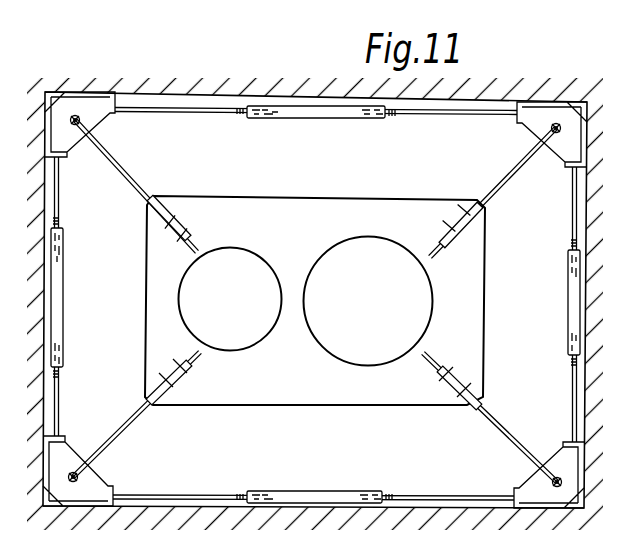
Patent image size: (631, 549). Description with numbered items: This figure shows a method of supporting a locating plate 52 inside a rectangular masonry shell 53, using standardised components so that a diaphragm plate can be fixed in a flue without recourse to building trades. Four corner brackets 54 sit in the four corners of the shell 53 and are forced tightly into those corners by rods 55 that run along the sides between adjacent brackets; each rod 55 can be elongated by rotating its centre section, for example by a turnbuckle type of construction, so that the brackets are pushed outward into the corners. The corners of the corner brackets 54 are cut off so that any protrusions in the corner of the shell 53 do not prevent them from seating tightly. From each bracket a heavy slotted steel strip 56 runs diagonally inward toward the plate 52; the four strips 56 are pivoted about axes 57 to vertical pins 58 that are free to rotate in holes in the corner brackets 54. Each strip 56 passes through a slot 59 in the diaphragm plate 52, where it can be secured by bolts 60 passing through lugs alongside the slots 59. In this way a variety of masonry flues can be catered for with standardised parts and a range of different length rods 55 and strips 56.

The locating plate 52 is at (307, 199).
The rectangular masonry shell 53 is at (258, 83).
The corner bracket 54 is at (103, 100).
The rod 55 is at (187, 107).
The slotted steel strip 56 is at (123, 166).
The axis 57 is at (81, 116).
The vertical pin 58 is at (75, 115).
The slot 59 is at (165, 208).
The bolt 60 is at (176, 227).